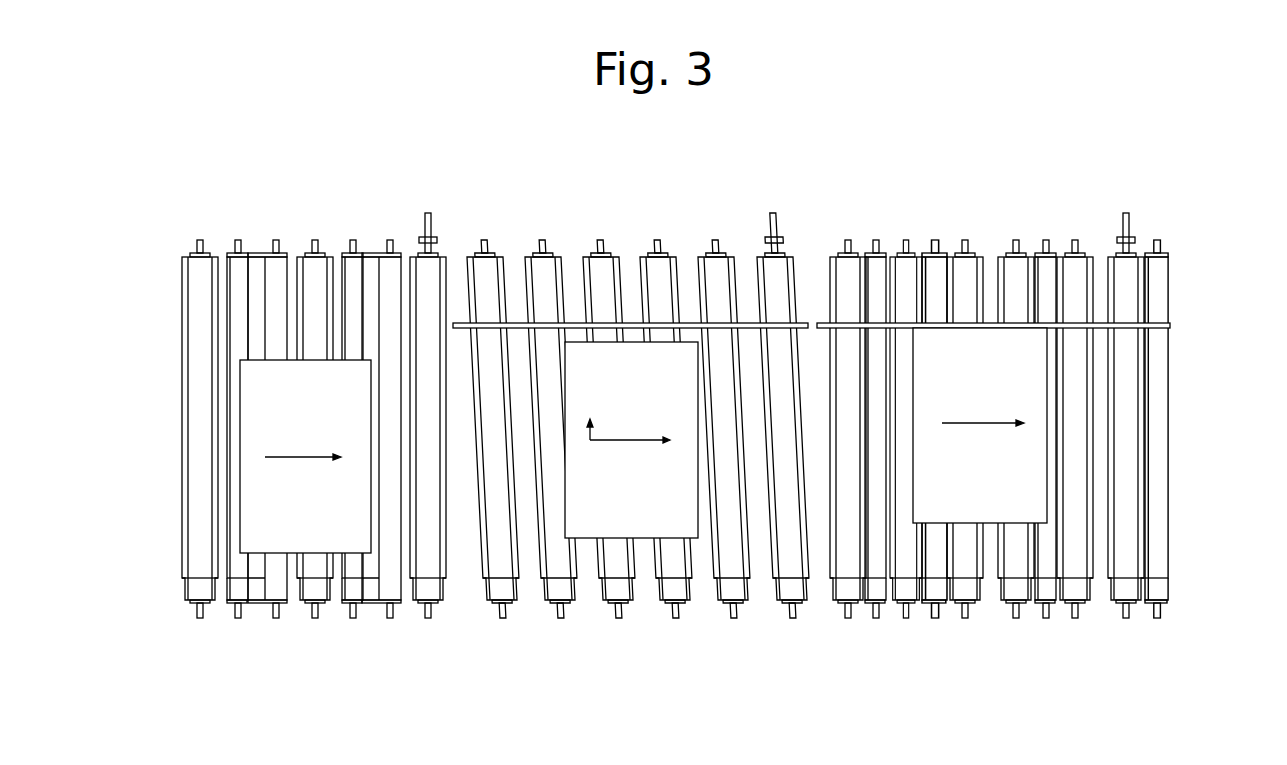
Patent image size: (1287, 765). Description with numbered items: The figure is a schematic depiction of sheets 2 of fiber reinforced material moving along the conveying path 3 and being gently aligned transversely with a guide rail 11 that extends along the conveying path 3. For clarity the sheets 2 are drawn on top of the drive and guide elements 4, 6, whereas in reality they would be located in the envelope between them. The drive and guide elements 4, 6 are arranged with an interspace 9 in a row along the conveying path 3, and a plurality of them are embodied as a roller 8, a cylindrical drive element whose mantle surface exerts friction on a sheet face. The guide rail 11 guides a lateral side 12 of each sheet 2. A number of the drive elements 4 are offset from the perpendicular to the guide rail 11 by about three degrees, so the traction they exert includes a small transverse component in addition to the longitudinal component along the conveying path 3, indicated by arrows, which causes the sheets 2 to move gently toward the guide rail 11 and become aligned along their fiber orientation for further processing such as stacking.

The sheet 2 is at (277, 425).
The conveying path 3 is at (1046, 355).
The drive element 4 is at (258, 268).
The guide element 6 is at (352, 479).
The roller 8 is at (390, 590).
The interspace 9 is at (461, 244).
The guide rail 11 is at (1100, 324).
The lateral side 12 is at (293, 358).